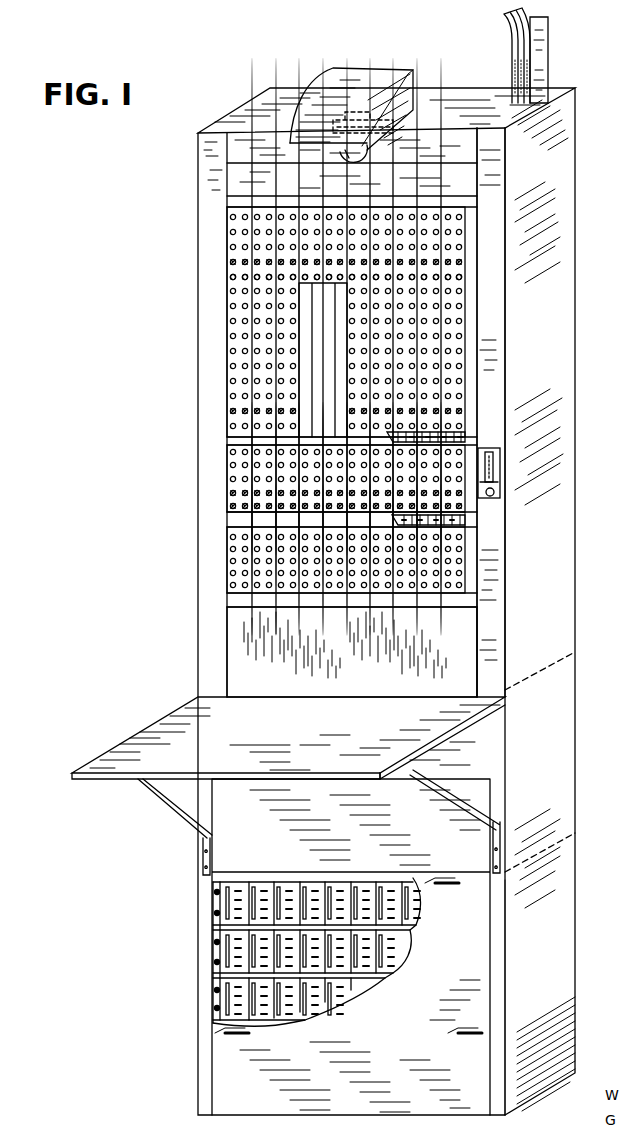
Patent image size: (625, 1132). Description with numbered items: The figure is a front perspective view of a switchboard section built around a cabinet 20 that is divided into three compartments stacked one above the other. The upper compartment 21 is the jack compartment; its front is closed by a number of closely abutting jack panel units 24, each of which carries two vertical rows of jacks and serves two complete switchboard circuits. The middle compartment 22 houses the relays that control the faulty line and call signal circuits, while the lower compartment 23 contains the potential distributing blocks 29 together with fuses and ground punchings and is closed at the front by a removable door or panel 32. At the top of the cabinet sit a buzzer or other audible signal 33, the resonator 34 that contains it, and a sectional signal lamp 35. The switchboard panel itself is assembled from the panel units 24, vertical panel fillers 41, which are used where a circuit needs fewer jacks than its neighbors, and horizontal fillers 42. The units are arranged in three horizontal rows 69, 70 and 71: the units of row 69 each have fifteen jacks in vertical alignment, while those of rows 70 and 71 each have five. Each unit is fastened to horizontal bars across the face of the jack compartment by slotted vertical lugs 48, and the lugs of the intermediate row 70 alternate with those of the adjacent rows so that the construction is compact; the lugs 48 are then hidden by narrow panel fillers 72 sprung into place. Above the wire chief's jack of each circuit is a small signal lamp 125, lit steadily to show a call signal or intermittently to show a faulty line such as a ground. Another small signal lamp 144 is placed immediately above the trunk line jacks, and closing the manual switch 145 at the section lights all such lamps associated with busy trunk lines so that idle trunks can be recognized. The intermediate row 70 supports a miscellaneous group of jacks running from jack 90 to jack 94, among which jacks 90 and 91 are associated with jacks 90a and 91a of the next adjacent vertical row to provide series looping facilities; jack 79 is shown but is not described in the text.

The cabinet 20 is at (182, 546).
The upper compartment 21 is at (555, 462).
The middle compartment 22 is at (550, 742).
The lower compartment 23 is at (550, 958).
The jack panel unit 24 is at (265, 298).
The potential distributing block 29 is at (230, 967).
The removable door or panel 32 is at (160, 737).
The buzzer or audible signal 33 is at (368, 110).
The resonator 34 is at (315, 95).
The sectional signal lamp 35 is at (335, 153).
The vertical panel filler 41 is at (305, 355).
The horizontal filler 42 is at (245, 633).
The vertical lug 48 is at (470, 437).
The horizontal row of panel units 69 is at (472, 366).
The intermediate horizontal row of panel units 70 is at (468, 481).
The horizontal row of panel units 71 is at (460, 560).
The narrow panel filler 72 is at (228, 437).
The jack row 79 is at (232, 278).
The jack 90 is at (238, 452).
The jack 90a is at (240, 465).
The jack 91 is at (238, 479).
The jack 91a is at (238, 493).
The jack 94 is at (235, 515).
The signal lamp 125 is at (232, 411).
The signal lamp 144 is at (232, 262).
The manual switch 145 is at (490, 467).